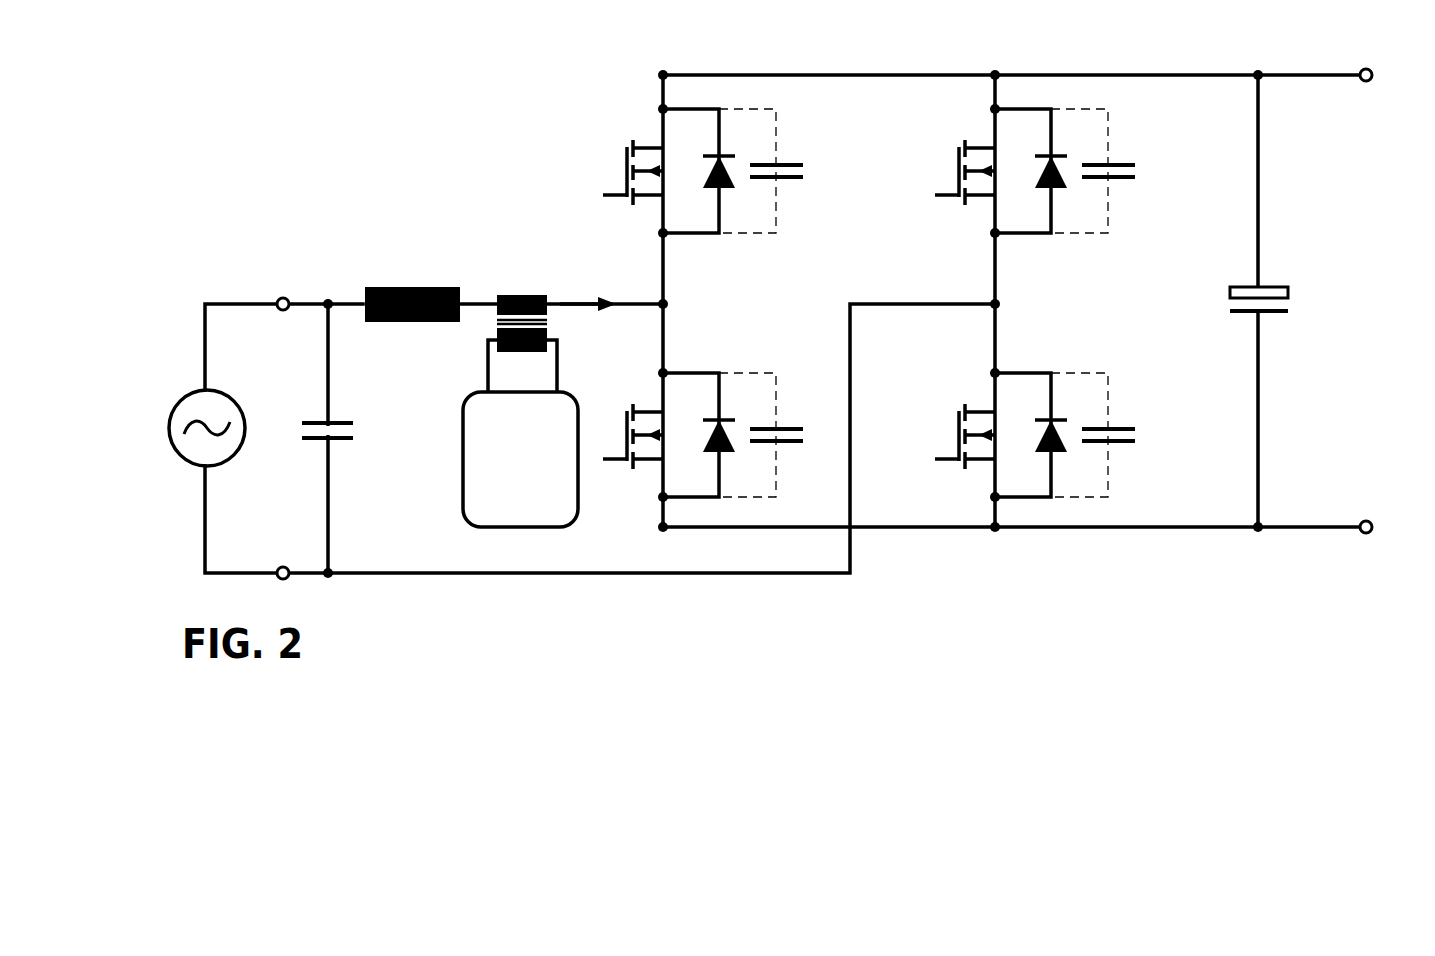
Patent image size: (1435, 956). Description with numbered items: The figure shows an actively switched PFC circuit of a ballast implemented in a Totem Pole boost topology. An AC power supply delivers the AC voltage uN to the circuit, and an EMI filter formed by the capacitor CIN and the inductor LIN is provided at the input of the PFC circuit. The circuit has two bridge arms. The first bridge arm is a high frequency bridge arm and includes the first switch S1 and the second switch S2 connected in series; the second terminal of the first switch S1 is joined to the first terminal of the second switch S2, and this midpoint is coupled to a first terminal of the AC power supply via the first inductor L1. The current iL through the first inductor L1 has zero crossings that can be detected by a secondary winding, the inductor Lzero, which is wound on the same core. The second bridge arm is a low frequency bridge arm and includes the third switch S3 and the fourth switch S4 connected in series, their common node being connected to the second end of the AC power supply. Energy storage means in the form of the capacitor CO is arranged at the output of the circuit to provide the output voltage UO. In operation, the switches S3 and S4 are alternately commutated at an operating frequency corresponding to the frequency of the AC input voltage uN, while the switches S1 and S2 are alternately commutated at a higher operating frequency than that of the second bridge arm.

The AC voltage uN is at (155, 377).
The capacitor CIN is at (345, 453).
The inductor LIN is at (412, 278).
The first inductor L1 is at (522, 287).
The secondary winding inductor Lzero is at (546, 424).
The current iL is at (587, 277).
The first switch S1 is at (697, 161).
The second switch S2 is at (700, 441).
The third switch S3 is at (1030, 161).
The fourth switch S4 is at (1027, 441).
The capacitor CO is at (1239, 301).
The output voltage UO is at (1366, 106).